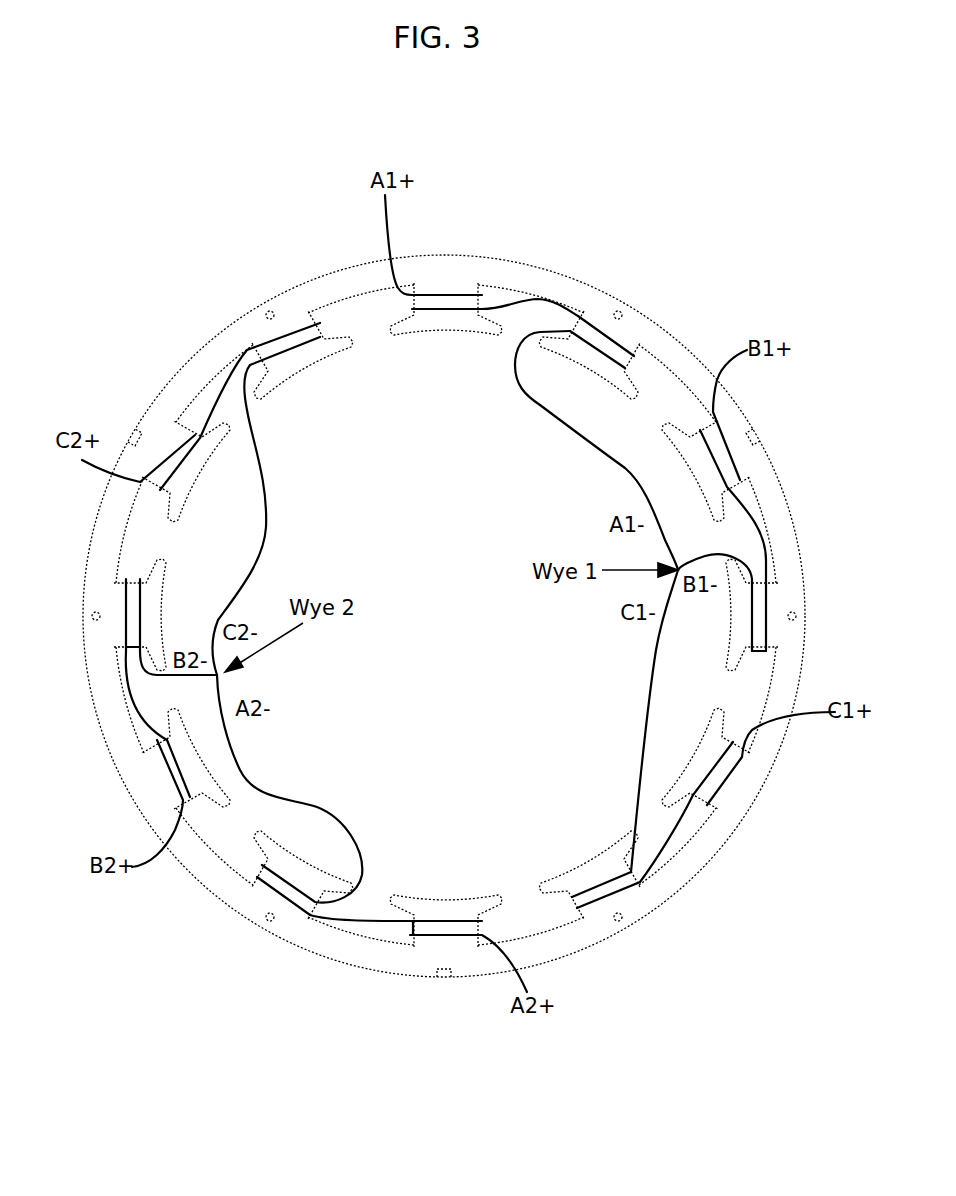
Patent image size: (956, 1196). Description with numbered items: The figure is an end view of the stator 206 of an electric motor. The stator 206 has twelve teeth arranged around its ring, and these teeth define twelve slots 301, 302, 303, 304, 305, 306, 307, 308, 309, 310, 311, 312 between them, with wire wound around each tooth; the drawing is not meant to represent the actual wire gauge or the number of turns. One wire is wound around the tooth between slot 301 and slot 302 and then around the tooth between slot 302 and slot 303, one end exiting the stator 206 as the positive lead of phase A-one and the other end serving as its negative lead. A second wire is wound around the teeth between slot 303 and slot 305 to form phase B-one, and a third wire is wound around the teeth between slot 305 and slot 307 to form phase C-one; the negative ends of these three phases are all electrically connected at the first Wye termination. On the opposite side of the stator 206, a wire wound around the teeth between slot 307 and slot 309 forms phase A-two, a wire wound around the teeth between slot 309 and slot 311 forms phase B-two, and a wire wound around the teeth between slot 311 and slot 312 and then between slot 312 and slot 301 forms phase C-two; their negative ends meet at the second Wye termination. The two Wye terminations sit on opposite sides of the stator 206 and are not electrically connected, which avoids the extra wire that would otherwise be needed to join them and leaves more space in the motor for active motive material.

The stator 206 is at (230, 243).
The slot 301 is at (318, 352).
The slot 302 is at (464, 309).
The slot 303 is at (608, 362).
The slot 304 is at (707, 484).
The slot 305 is at (747, 631).
The slot 306 is at (696, 772).
The slot 307 is at (571, 875).
The slot 308 is at (425, 921).
The slot 309 is at (280, 866).
The slot 310 is at (182, 745).
The slot 311 is at (142, 598).
The slot 312 is at (195, 456).